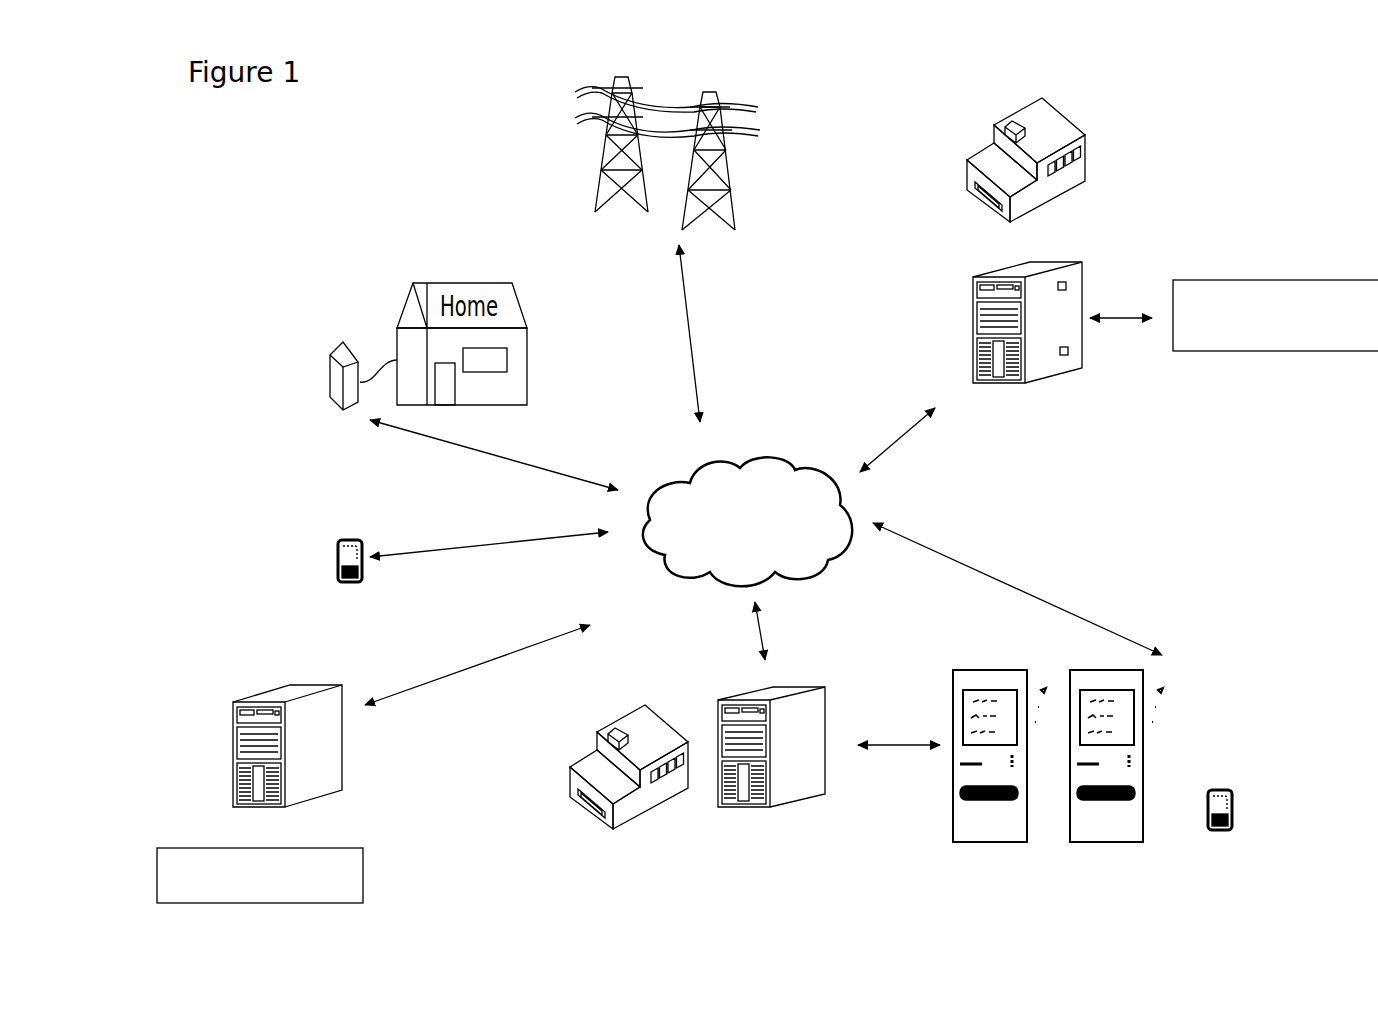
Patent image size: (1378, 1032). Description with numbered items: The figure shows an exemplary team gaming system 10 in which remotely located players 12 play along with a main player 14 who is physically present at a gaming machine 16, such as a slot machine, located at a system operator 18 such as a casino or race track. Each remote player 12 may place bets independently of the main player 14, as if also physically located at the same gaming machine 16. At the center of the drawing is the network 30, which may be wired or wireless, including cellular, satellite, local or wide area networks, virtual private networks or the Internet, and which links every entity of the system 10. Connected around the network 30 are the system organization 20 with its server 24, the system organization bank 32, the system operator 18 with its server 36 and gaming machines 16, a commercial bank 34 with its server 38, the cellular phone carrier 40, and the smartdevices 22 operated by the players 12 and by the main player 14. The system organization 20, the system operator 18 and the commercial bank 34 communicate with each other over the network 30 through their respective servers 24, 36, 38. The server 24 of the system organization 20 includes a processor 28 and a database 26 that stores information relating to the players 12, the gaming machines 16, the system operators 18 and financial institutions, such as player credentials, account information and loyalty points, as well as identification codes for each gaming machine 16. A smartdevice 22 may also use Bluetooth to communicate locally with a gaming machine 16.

The team gaming system 10 is at (298, 196).
The player 12 is at (233, 385).
The main player 14 is at (1240, 739).
The gaming machine 16 is at (988, 832).
The system operator 18 is at (638, 808).
The system organization 20 is at (1035, 197).
The smartdevice 22 is at (335, 393).
The server 24 is at (1000, 383).
The database 26 is at (1066, 286).
The processor 28 is at (1068, 355).
The network 30 is at (752, 470).
The system organization bank 32 is at (1258, 352).
The commercial bank 34 is at (358, 890).
The server 36 is at (745, 807).
The server 38 is at (255, 807).
The cellular phone carrier 40 is at (676, 86).